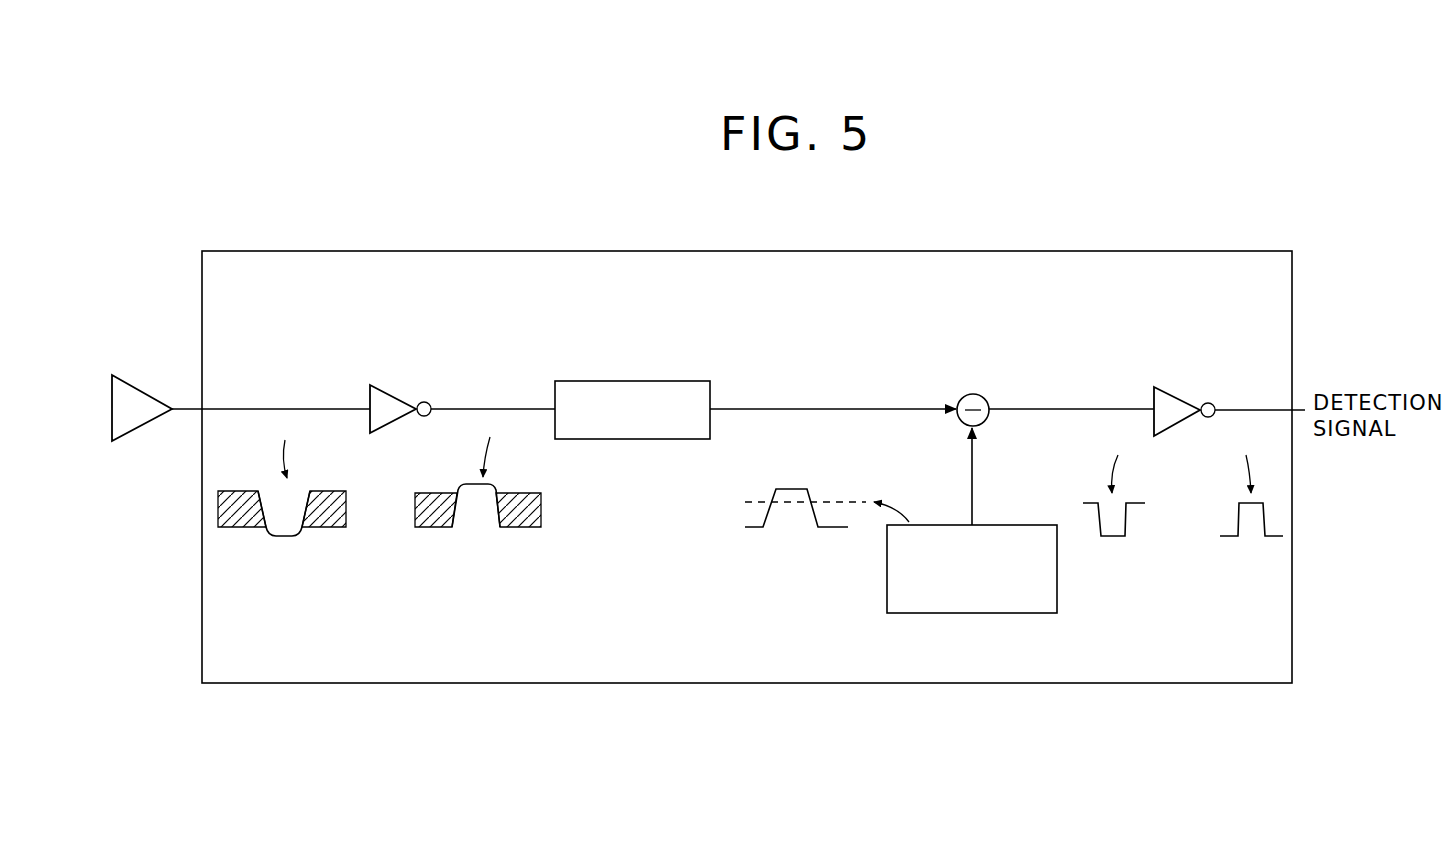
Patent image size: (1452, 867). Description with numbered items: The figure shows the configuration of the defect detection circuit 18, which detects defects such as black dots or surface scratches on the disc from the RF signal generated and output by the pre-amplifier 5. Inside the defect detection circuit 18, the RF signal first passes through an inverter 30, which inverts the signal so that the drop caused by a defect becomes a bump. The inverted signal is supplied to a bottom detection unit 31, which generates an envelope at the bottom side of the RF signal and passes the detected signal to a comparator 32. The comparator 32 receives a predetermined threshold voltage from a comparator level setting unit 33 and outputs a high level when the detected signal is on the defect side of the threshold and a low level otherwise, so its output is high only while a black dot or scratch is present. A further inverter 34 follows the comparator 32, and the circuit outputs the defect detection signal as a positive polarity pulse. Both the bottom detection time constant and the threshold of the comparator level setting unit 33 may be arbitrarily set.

The pre-amplifier 5 is at (138, 390).
The defect detection circuit 18 is at (944, 250).
The inverter 30 is at (390, 392).
The bottom detection unit 31 is at (633, 380).
The comparator 32 is at (978, 393).
The comparator level setting unit 33 is at (984, 616).
The inverter 34 is at (1175, 392).